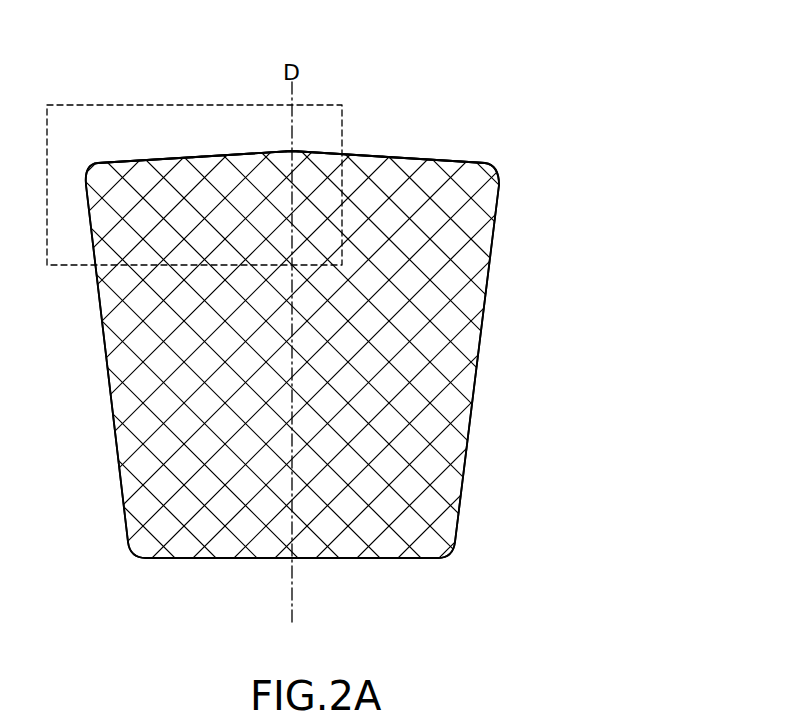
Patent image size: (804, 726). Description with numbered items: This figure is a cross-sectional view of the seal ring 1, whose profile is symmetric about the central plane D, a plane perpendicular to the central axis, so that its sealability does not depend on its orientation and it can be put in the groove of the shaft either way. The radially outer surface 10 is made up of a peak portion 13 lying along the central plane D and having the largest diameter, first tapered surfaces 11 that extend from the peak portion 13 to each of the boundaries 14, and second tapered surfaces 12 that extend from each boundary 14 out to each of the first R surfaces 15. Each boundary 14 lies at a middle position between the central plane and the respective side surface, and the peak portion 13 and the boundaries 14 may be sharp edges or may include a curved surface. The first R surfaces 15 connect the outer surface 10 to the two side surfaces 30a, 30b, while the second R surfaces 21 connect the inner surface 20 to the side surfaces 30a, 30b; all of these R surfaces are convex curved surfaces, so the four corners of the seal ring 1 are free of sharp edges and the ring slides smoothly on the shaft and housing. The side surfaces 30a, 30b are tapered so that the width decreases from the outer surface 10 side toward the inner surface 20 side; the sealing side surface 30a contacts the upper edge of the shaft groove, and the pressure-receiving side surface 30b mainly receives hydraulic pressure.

The seal ring 1 is at (571, 139).
The outer surface 10 is at (398, 114).
The first tapered surfaces 11 is at (292, 148).
The second tapered surfaces 12 is at (197, 154).
The peak portion 13 is at (293, 148).
The boundaries 14 is at (199, 150).
The first R surfaces 15 is at (88, 166).
The inner surface 20 is at (250, 559).
The second R surfaces 21 is at (128, 551).
The sealing side surface 30a is at (107, 366).
The pressure-receiving side surface 30b is at (478, 362).